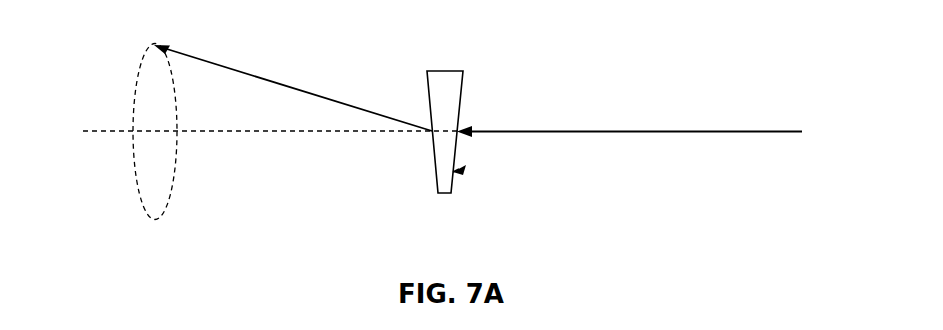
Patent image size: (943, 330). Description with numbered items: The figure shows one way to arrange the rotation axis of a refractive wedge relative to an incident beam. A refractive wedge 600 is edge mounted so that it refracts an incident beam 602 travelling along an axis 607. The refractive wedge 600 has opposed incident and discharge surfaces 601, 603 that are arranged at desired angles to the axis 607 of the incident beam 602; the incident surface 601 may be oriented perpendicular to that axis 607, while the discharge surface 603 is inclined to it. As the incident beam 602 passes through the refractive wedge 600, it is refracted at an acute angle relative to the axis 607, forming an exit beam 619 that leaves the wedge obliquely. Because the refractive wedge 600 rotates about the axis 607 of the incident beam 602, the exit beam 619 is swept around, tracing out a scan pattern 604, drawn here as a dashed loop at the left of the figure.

The optical wedge element 600 is at (466, 169).
The wedge surface 601 is at (461, 97).
The incident light beam 602 is at (720, 133).
The wedge surface 603 is at (429, 97).
The scan circle 604 is at (172, 168).
The optical axis 607 is at (337, 133).
The deflected beam 619 is at (257, 75).